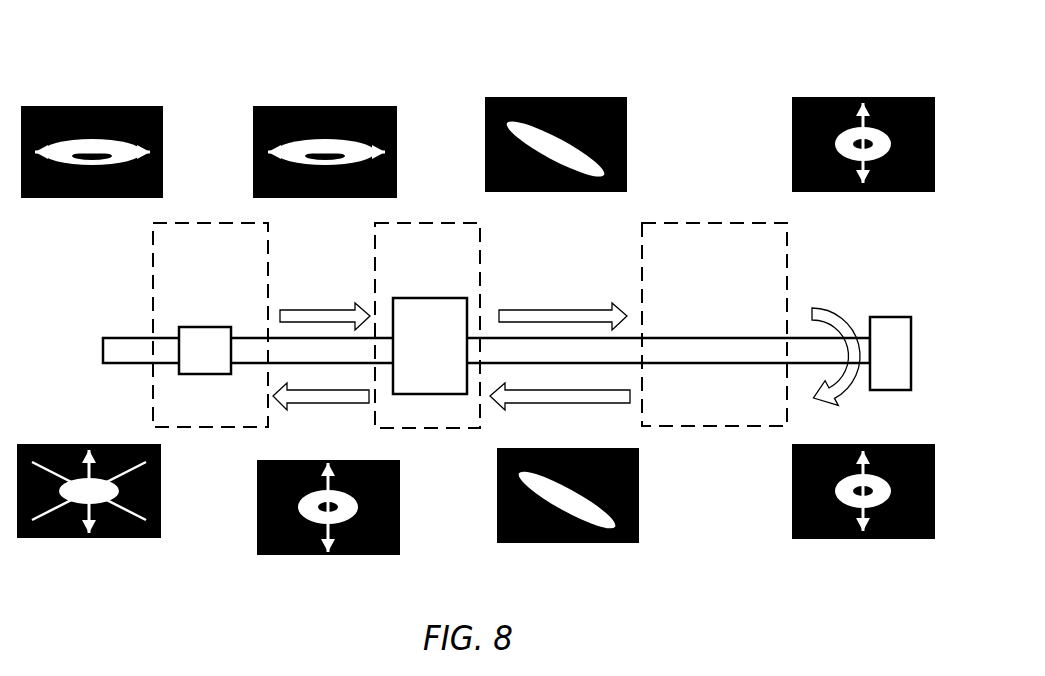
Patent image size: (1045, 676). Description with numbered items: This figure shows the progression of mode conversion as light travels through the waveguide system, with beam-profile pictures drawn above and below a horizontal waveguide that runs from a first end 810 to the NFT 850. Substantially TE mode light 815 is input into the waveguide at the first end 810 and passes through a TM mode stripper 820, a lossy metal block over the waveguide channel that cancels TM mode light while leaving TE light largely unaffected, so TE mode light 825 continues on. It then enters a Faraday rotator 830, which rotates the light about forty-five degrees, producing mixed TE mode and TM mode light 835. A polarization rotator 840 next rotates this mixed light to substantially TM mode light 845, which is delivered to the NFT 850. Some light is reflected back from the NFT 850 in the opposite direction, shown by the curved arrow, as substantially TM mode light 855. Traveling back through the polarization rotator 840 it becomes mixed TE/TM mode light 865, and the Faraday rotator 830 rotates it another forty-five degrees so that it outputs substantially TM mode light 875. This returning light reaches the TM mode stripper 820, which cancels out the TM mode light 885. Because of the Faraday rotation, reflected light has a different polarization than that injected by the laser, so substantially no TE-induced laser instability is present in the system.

The first end 810 is at (136, 338).
The TE mode light 815 is at (108, 105).
The TM mode stripper 820 is at (232, 222).
The TE mode light 825 is at (335, 105).
The Faraday rotator 830 is at (460, 222).
The mixed TE mode and TM mode light 835 is at (558, 96).
The polarization rotator 840 is at (732, 222).
The TM mode light 845 is at (883, 96).
The NFT 850 is at (901, 316).
The reflected TM mode light 855 is at (862, 540).
The mixed TE/TM mode light 865 is at (577, 544).
The TM mode light 875 is at (338, 556).
The cancelled TM mode light 885 is at (113, 540).